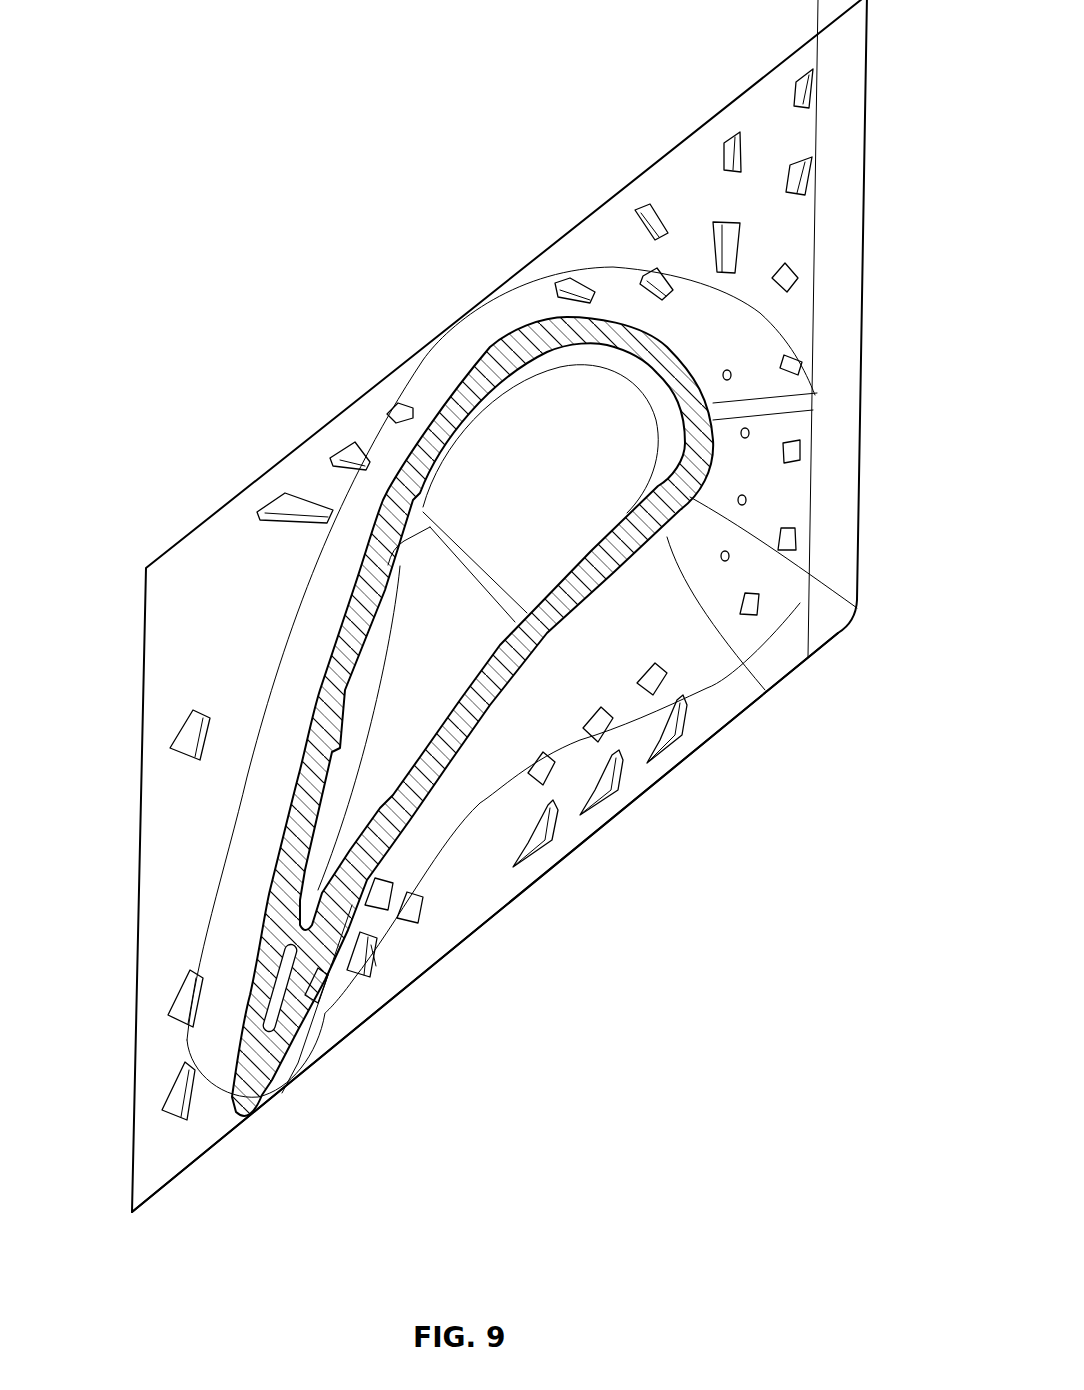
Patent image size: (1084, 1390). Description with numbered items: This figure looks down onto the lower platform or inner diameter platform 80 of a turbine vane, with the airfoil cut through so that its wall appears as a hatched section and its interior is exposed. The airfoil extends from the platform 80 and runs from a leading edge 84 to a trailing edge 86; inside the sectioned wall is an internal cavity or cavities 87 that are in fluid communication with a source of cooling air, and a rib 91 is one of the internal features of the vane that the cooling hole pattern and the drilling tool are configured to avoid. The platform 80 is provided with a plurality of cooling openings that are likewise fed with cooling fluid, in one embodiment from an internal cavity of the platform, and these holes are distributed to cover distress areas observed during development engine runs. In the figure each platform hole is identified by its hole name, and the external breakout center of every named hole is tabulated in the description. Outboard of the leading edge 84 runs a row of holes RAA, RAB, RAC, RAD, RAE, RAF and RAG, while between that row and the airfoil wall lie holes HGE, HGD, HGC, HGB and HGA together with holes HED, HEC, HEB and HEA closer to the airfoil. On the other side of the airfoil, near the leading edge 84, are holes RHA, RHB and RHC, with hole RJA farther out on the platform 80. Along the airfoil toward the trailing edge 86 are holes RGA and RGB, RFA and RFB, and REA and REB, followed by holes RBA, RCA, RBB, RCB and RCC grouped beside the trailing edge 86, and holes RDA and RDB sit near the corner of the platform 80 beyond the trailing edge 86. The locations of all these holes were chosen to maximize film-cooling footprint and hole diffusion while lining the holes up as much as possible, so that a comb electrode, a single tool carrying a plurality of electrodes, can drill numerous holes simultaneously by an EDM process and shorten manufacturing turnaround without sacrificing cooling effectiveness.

The lower platform or inner diameter platform 80 is at (865, 32).
The leading edge 84 is at (652, 333).
The trailing edge 86 is at (203, 1153).
The internal cavity 87 is at (612, 545).
The rib 91 is at (322, 475).
The cooling hole RAA is at (808, 70).
The cooling hole RAB is at (735, 132).
The cooling hole RAC is at (800, 157).
The cooling hole RAD is at (727, 222).
The cooling hole RAE is at (637, 210).
The cooling hole RAF is at (650, 270).
The cooling hole RAG is at (563, 283).
The cooling hole RBA is at (397, 883).
The cooling hole RBB is at (372, 938).
The cooling hole RCA is at (423, 910).
The cooling hole RCB is at (377, 965).
The cooling hole RCC is at (333, 982).
The cooling hole RDA is at (176, 992).
The cooling hole RDB is at (172, 1085).
The cooling hole REA is at (555, 775).
The cooling hole REB is at (558, 817).
The cooling hole RFA is at (613, 725).
The cooling hole RFB is at (623, 767).
The cooling hole RGA is at (667, 673).
The cooling hole RGB is at (687, 712).
The cooling hole RHA is at (393, 408).
The cooling hole RHB is at (343, 450).
The cooling hole RHC is at (268, 511).
The cooling hole RJA is at (178, 733).
The cooling hole HEA is at (730, 555).
The cooling hole HEB is at (746, 498).
The cooling hole HEC is at (748, 430).
The cooling hole HED is at (731, 372).
The cooling hole HGA is at (760, 600).
The cooling hole HGB is at (793, 530).
The cooling hole HGC is at (798, 442).
The cooling hole HGD is at (800, 358).
The cooling hole HGE is at (797, 270).